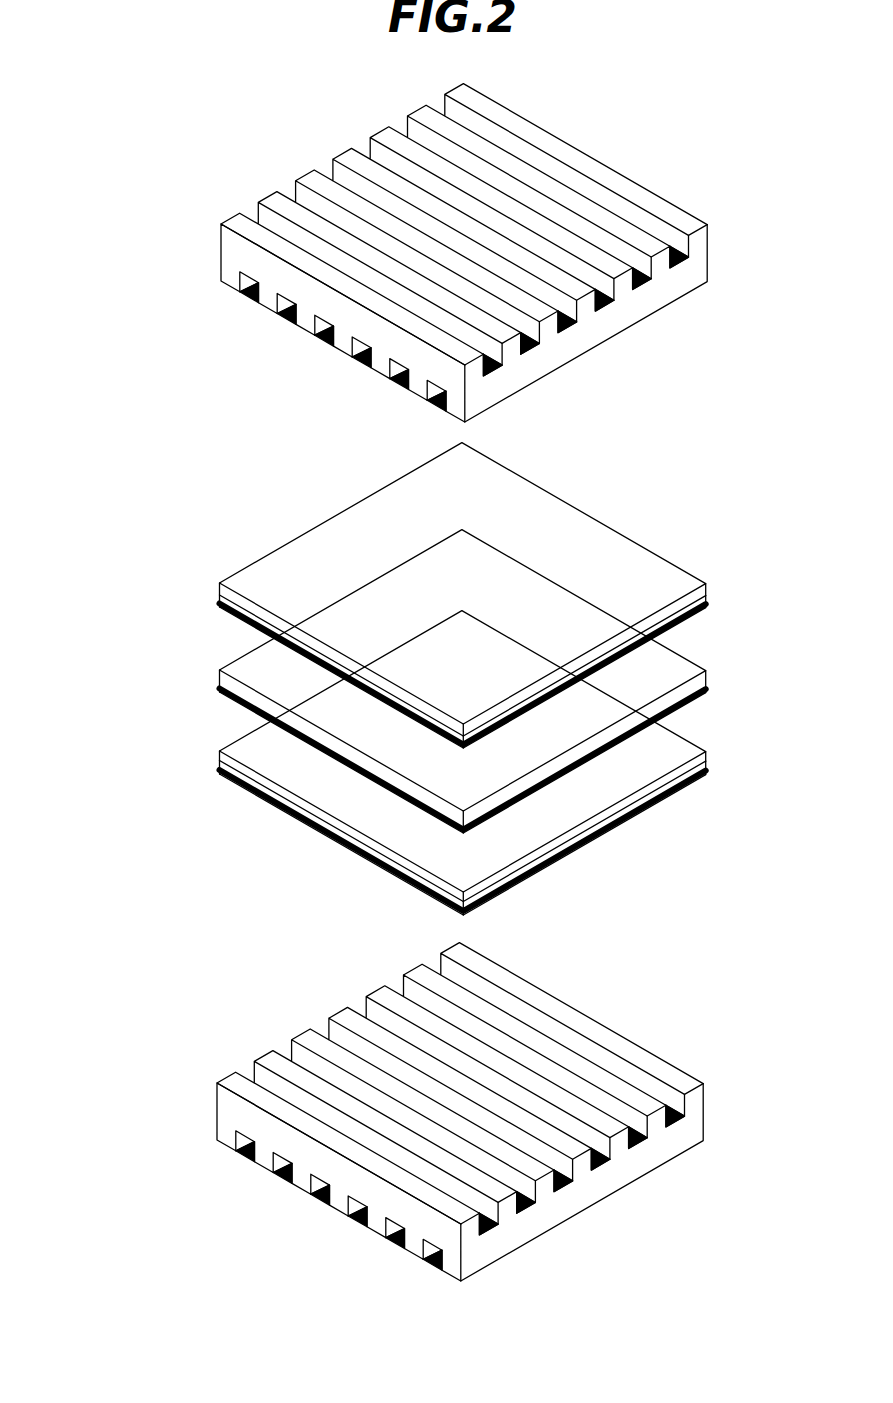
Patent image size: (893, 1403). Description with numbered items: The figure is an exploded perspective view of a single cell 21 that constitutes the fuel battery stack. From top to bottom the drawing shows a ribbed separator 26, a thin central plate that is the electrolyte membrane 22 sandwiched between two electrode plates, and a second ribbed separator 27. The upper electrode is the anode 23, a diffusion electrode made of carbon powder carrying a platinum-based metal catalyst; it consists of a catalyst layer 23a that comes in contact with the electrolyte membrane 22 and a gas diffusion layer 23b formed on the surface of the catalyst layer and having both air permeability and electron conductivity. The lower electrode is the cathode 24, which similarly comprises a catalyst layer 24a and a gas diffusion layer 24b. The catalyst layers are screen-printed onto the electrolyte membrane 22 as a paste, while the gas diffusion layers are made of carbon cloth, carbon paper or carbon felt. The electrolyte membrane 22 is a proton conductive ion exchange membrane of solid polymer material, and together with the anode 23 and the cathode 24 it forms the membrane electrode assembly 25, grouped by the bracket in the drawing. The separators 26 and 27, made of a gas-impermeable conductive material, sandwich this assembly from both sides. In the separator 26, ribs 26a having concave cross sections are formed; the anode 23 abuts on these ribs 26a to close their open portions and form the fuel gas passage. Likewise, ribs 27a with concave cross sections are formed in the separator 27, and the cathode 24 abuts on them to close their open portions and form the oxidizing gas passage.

The cell 21 is at (76, 178).
The electrolyte membrane 22 is at (220, 682).
The anode 23 is at (130, 562).
The catalyst layer 23a is at (220, 600).
The gas diffusion layer 23b is at (220, 591).
The cathode 24 is at (130, 732).
The catalyst layer 24a is at (220, 755).
The gas diffusion layer 24b is at (220, 768).
The membrane electrode assembly 25 is at (89, 575).
The separator 26 is at (220, 252).
The ribs 26a is at (287, 303).
The separator 27 is at (705, 1127).
The ribs 27a is at (657, 1107).